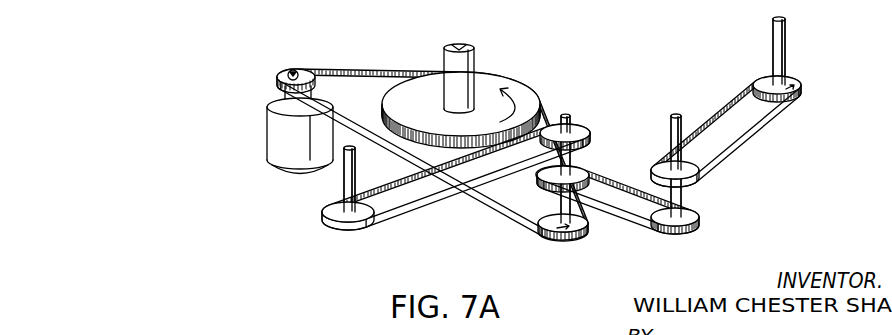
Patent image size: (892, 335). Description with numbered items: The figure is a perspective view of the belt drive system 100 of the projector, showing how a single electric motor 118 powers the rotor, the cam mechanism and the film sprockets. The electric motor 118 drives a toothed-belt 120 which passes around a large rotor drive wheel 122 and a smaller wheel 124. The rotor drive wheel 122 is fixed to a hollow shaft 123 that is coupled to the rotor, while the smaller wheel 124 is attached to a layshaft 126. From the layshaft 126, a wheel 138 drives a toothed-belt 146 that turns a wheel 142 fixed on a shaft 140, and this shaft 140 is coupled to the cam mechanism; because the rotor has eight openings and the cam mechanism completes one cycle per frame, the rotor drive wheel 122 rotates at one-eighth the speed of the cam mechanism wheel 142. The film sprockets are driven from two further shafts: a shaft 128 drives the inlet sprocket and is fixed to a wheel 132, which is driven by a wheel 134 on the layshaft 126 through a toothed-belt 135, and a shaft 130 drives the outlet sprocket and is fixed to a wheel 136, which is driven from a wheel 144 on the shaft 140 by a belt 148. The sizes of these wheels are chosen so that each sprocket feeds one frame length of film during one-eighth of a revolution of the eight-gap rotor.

The belt drive system 100 is at (268, 233).
The electric motor 118 is at (273, 127).
The toothed-belt 120 is at (372, 68).
The rotor drive wheel 122 is at (520, 88).
The hollow shaft 123 is at (476, 60).
The smaller wheel 124 is at (585, 225).
The layshaft 126 is at (581, 163).
The shaft 128 is at (343, 178).
The shaft 130 is at (787, 40).
The wheel 132 is at (337, 223).
The wheel 134 is at (571, 126).
The toothed-belt 135 is at (433, 202).
The wheel 136 is at (791, 80).
The wheel 138 is at (583, 173).
The shaft 140 is at (683, 200).
The wheel 142 is at (687, 212).
The wheel 144 is at (700, 168).
The toothed-belt 146 is at (640, 225).
The belt 148 is at (715, 115).